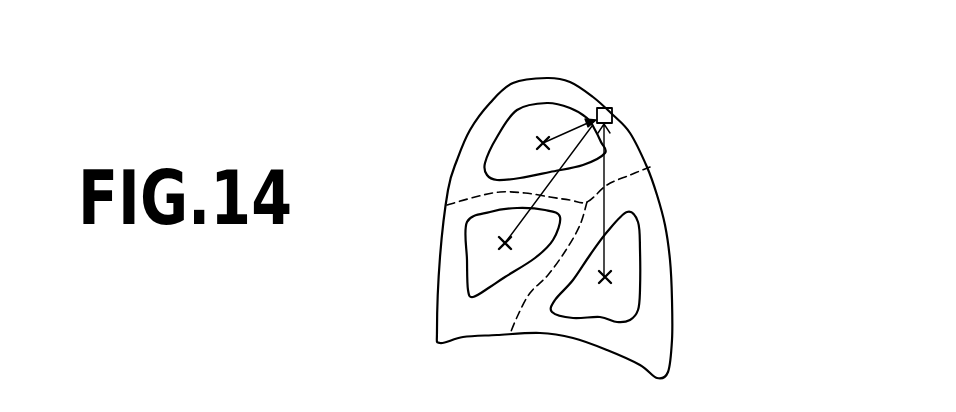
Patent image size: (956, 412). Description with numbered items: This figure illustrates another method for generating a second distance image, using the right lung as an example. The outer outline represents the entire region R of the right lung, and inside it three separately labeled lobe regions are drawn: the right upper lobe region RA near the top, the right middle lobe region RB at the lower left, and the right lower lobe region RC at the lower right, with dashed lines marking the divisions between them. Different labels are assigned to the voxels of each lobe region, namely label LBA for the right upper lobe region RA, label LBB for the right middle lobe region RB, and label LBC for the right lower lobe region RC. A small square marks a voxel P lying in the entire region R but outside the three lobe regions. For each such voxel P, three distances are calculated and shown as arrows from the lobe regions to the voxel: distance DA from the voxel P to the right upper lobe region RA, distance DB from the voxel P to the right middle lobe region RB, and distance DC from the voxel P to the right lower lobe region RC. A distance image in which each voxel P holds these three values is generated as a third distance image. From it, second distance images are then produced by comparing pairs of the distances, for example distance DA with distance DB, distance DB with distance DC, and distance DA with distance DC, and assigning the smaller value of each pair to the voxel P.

The entire region of the right lung R is at (585, 92).
The label LB_A LBA is at (520, 127).
The right upper lobe region RA is at (502, 135).
The distance D_A DA is at (563, 132).
The voxel P is at (612, 113).
The label LB_B LBB is at (473, 233).
The right middle lobe region RB is at (465, 262).
The distance D_B DB is at (518, 228).
The label LB_C LBC is at (625, 260).
The right lower lobe region RC is at (640, 288).
The distance D_C DC is at (606, 233).